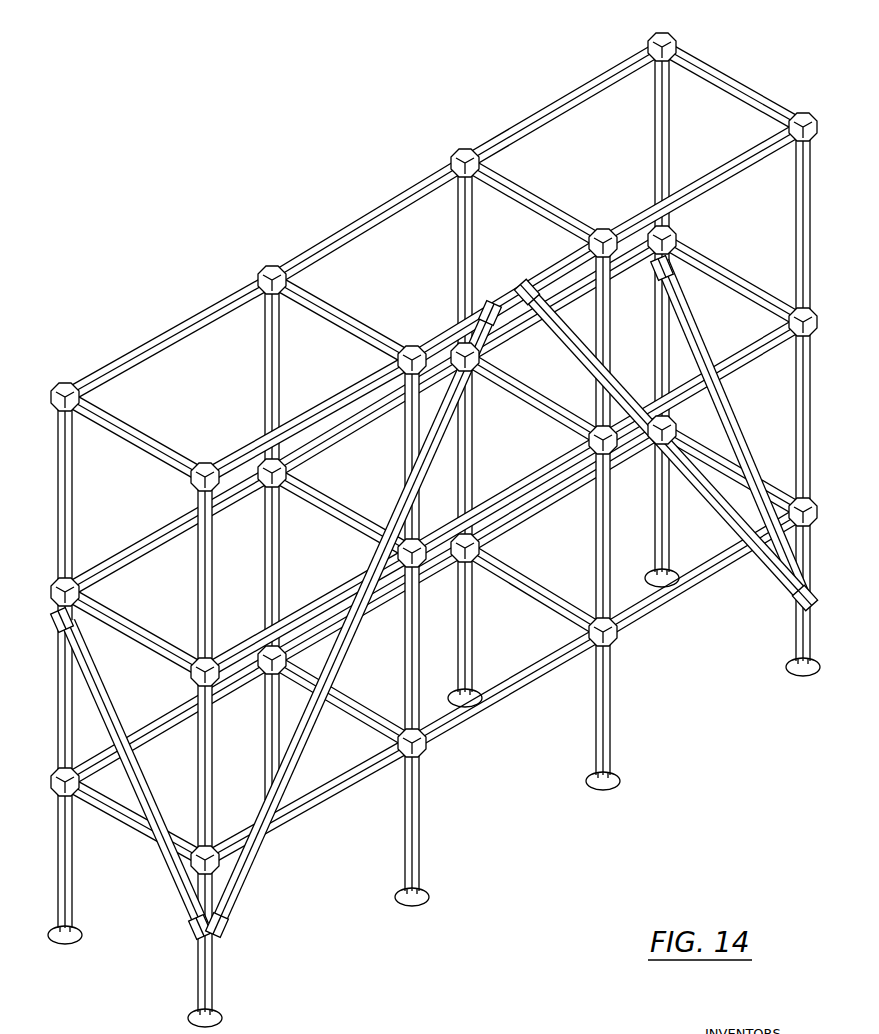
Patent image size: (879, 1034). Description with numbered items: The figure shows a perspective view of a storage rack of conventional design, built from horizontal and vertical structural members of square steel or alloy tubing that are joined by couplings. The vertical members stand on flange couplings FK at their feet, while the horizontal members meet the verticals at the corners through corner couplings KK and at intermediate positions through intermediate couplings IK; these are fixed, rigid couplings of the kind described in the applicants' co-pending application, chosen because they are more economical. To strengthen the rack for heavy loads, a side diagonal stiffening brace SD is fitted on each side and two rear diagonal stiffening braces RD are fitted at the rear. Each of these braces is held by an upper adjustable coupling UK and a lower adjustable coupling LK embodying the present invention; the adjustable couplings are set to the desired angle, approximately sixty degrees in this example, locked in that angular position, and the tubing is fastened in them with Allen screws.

The corner coupling KK is at (803, 112).
The intermediate coupling IK is at (456, 150).
The upper adjustable coupling UK is at (78, 626).
The lower adjustable coupling LK is at (195, 933).
The side diagonal stiffening brace SD is at (138, 768).
The rear diagonal stiffening brace RD is at (298, 750).
The flange coupling FK is at (800, 676).